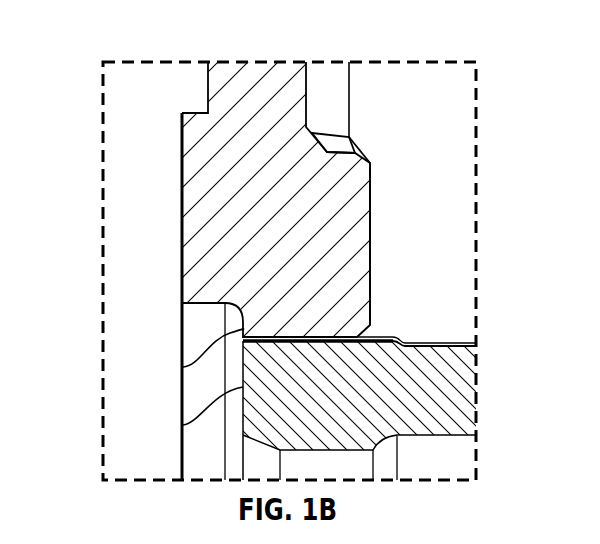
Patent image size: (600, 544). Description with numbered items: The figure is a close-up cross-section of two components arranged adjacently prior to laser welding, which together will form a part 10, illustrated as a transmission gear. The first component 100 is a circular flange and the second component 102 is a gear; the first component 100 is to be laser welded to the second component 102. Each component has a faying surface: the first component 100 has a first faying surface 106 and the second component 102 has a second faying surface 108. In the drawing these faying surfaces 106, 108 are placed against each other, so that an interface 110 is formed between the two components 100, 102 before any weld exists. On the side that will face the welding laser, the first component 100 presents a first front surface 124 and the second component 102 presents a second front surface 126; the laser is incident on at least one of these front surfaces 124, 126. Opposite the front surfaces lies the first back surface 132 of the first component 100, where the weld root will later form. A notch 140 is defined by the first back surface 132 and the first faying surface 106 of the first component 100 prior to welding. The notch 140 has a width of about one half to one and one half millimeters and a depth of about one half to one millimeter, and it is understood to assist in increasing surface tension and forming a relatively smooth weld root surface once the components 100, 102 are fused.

The part 10 is at (101, 47).
The first component 100 is at (357, 217).
The second component 102 is at (466, 376).
The first faying surface 106 is at (290, 340).
The second faying surface 108 is at (290, 341).
The interface 110 is at (315, 342).
The first front surface 124 is at (183, 367).
The second front surface 126 is at (183, 425).
The first back surface 132 is at (372, 263).
The notch 140 is at (365, 334).